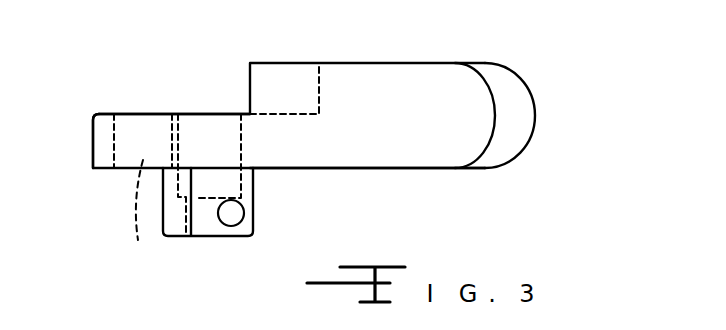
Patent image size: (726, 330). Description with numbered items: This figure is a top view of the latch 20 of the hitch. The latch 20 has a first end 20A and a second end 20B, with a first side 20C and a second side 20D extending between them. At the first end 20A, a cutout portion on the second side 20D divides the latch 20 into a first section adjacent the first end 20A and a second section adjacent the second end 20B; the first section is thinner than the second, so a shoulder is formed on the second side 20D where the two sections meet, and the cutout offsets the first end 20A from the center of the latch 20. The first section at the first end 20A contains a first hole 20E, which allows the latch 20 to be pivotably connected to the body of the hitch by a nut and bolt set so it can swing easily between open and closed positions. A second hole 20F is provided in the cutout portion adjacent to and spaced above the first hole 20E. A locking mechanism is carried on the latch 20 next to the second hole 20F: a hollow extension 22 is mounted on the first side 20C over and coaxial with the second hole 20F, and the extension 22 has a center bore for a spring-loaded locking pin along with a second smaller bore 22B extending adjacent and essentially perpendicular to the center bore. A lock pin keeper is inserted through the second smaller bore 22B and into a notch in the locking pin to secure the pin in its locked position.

The latch 20 is at (385, 75).
The first end 20A is at (93, 160).
The second end 20B is at (523, 130).
The first side 20C is at (363, 168).
The second side 20D is at (157, 100).
The first hole 20E is at (149, 192).
The second hole 20F is at (201, 135).
The hollow extension 22 is at (253, 200).
The second smaller bore 22B is at (233, 226).